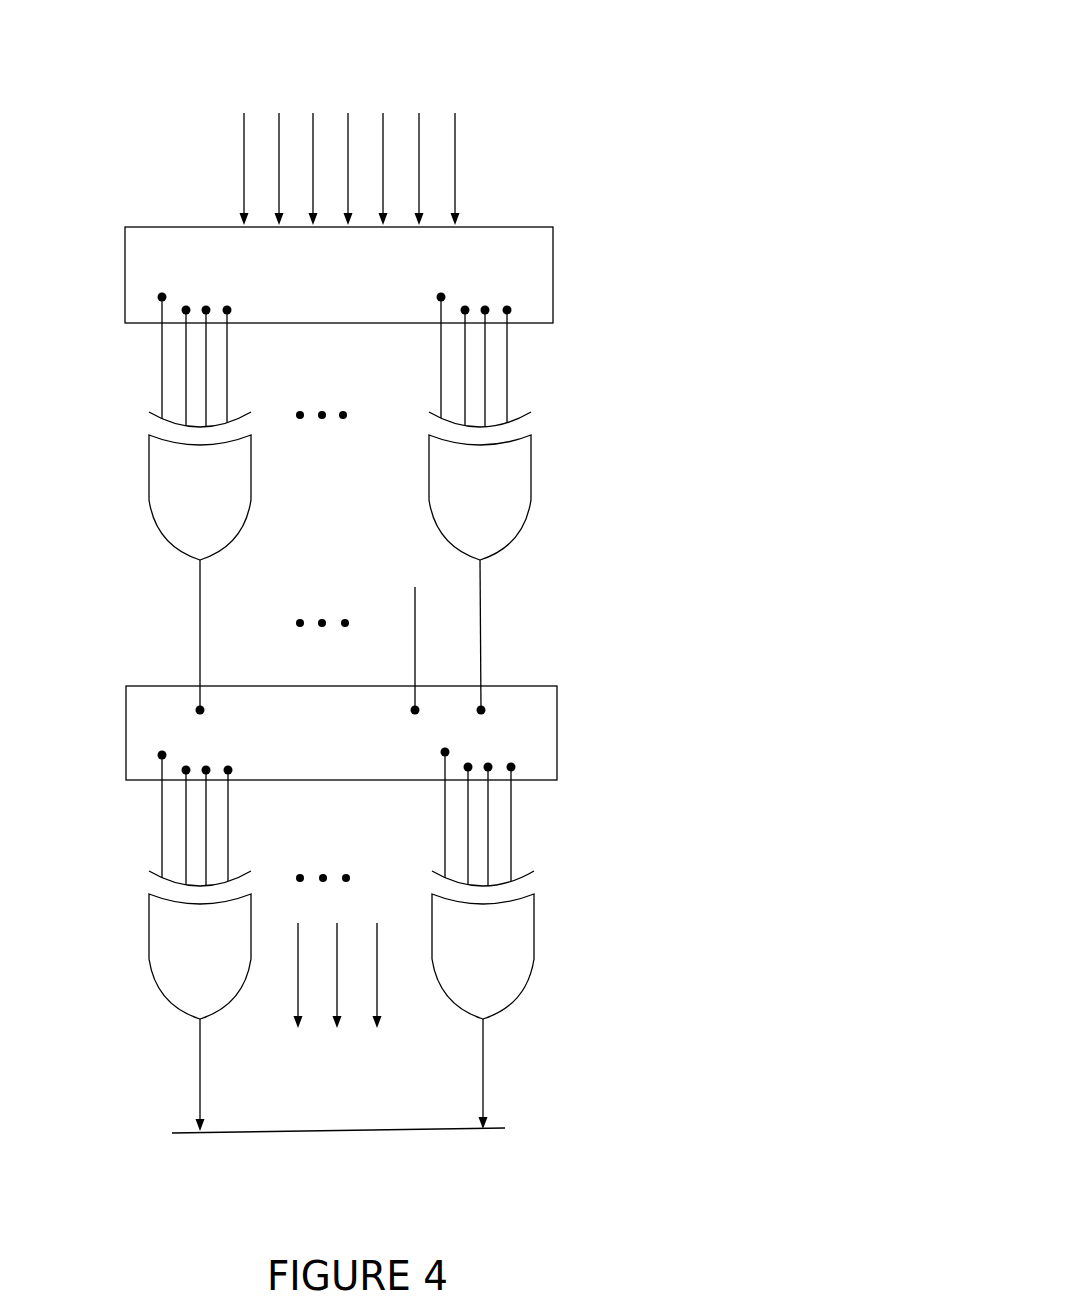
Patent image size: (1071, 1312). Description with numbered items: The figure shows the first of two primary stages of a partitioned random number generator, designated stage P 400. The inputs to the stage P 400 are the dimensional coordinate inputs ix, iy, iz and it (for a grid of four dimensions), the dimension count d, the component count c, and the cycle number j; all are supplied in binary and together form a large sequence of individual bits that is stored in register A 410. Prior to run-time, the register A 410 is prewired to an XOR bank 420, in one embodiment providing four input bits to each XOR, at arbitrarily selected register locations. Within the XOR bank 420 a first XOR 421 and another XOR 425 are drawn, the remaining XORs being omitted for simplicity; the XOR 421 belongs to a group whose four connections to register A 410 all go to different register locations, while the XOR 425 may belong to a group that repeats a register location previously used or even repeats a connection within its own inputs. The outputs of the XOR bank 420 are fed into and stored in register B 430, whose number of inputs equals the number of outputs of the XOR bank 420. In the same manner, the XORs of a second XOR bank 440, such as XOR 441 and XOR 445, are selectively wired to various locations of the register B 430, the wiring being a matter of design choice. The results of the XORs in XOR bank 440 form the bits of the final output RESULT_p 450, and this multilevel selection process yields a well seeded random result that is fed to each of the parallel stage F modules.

The stage P 400 is at (663, 108).
The register A 410 is at (553, 271).
The XOR bank 420 is at (439, 503).
The first XOR 421 is at (149, 492).
The XOR 425 is at (531, 490).
The register B 430 is at (557, 730).
The XOR bank 440 is at (446, 941).
The XOR 441 is at (149, 951).
The XOR 445 is at (534, 949).
The RESULT_p 450 is at (338, 1154).